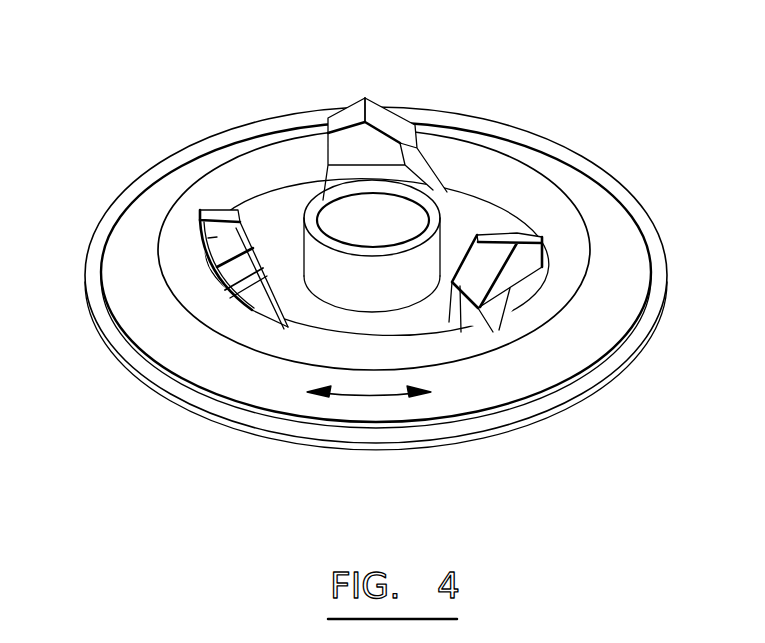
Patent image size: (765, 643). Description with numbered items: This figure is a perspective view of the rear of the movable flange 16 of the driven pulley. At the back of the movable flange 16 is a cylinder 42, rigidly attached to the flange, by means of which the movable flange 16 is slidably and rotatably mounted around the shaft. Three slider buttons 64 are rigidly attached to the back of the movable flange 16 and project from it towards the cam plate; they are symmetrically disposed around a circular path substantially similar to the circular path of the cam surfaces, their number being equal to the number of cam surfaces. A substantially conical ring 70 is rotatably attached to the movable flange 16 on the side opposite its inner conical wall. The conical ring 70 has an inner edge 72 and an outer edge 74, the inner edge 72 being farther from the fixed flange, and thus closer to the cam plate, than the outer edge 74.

The movable flange 16 is at (615, 178).
The cylinder 42 is at (386, 297).
The slider buttons 64 is at (392, 122).
The conical ring 70 is at (642, 266).
The inner edge 72 is at (258, 316).
The outer edge 74 is at (131, 337).